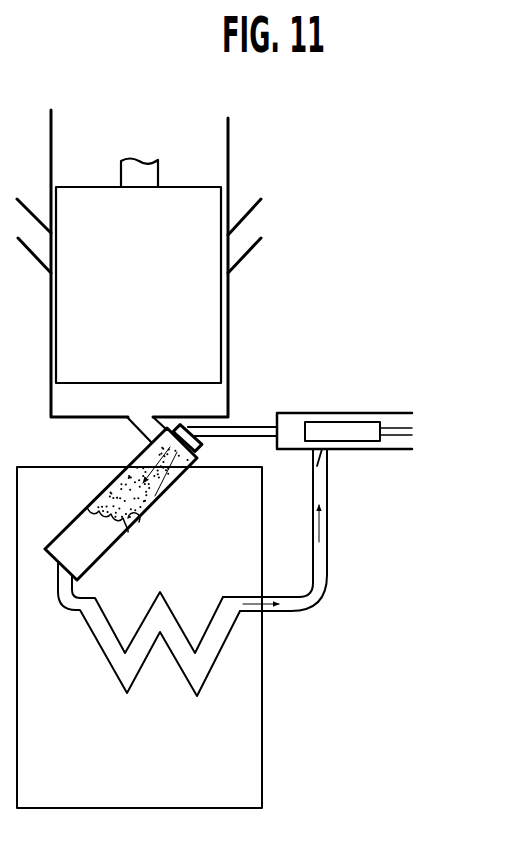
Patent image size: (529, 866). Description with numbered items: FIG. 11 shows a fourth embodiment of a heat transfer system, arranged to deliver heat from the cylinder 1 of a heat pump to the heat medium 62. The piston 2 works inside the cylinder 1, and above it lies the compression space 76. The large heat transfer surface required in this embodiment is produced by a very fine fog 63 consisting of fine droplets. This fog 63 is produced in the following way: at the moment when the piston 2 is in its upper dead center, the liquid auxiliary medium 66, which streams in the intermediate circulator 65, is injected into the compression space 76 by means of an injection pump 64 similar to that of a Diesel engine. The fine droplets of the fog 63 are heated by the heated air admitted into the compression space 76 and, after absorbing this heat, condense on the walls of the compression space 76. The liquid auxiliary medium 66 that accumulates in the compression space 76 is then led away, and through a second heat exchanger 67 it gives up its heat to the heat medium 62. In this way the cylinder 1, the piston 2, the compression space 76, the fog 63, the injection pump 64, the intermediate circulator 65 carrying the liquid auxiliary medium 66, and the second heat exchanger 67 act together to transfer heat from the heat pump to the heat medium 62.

The cylinder 1 is at (228, 333).
The piston 2 is at (151, 290).
The heat medium 62 is at (242, 768).
The fog 63 is at (147, 485).
The piston-cylinder drive 64 is at (346, 407).
The intermediate circulator 65 is at (297, 602).
The liquid auxiliary medium 66 is at (320, 452).
The second heat exchanger 67 is at (124, 690).
The compression space 76 is at (134, 522).